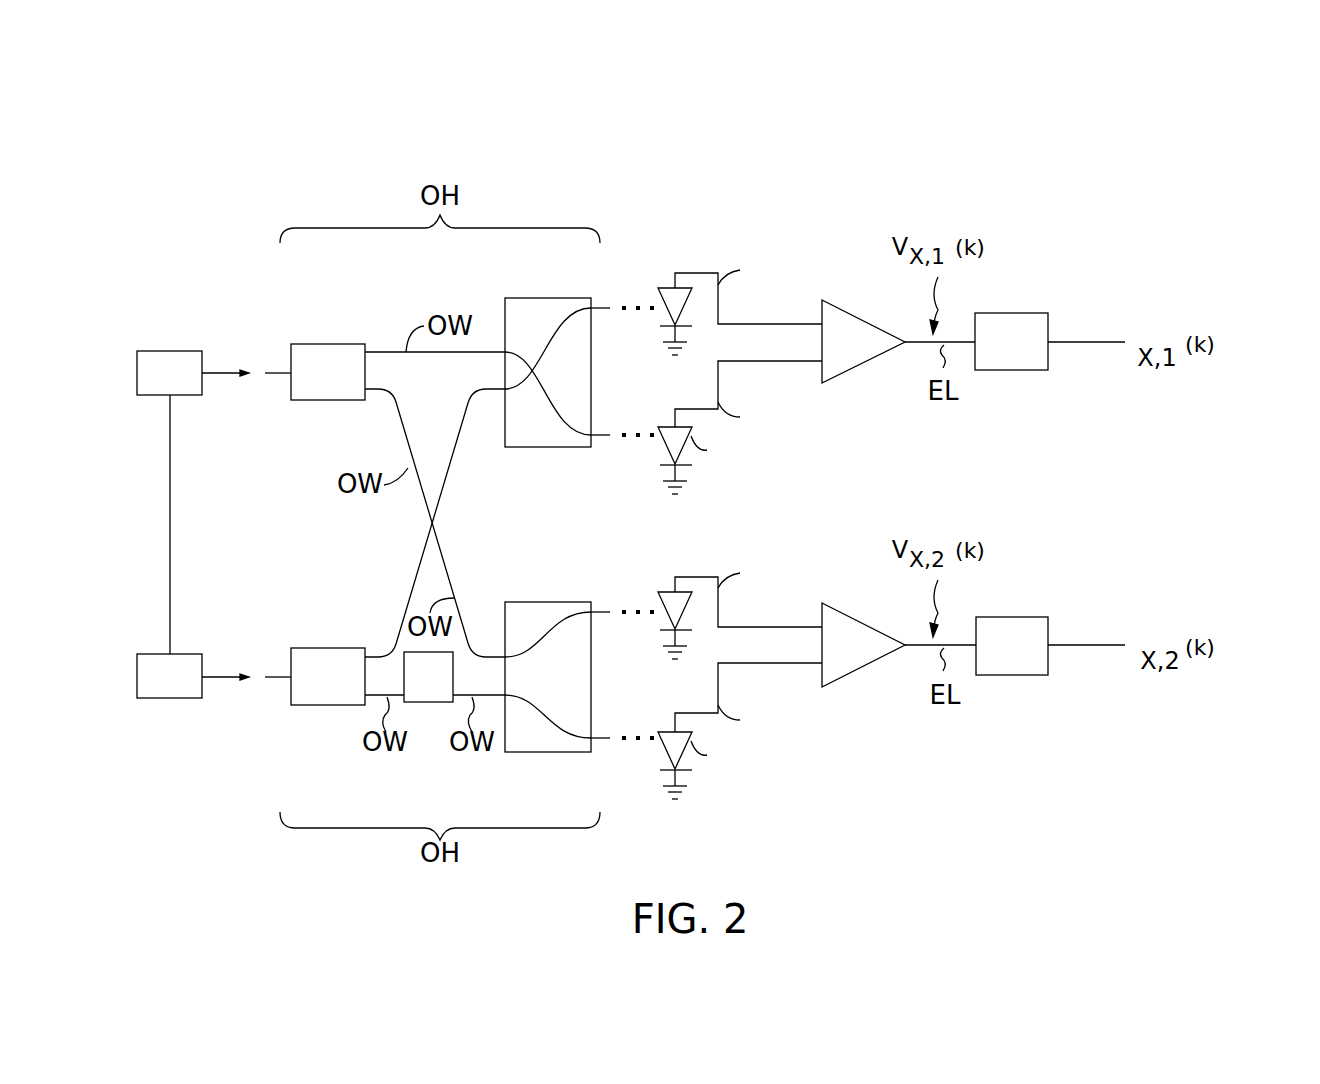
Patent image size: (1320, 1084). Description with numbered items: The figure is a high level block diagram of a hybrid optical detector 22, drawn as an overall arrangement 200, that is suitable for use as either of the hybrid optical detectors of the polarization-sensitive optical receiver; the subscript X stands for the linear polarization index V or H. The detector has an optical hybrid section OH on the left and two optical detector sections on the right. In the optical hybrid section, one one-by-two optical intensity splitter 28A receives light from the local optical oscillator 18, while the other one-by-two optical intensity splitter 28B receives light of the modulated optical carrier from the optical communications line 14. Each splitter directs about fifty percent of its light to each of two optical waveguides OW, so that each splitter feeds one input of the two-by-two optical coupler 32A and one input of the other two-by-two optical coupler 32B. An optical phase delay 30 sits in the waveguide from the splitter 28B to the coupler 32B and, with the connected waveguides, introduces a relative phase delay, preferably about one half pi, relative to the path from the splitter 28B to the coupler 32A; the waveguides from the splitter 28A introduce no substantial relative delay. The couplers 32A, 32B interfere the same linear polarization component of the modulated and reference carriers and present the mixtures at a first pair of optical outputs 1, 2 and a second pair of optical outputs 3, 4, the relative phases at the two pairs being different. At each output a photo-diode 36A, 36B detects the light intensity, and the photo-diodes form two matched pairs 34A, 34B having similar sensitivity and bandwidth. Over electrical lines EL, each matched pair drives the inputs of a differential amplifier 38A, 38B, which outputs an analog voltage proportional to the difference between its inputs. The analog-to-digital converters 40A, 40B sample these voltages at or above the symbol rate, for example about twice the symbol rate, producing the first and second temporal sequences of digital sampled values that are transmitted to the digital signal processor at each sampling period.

The receiver arrangement 200 is at (1133, 162).
The hybrid optical detector 22 is at (895, 139).
The local optical oscillator 18 is at (157, 388).
The optical communications line 14 is at (157, 691).
The 1×2 optical intensity splitter 28A is at (302, 388).
The 1×2 optical intensity splitter 28B is at (302, 691).
The optical phase delay 30 is at (415, 691).
The 2×2 optical coupler 32A is at (533, 448).
The 2×2 optical coupler 32B is at (533, 753).
The matched pair of photo-diodes 34A is at (707, 338).
The matched pair of photo-diodes 34B is at (733, 503).
The photo-diode 36A is at (660, 287).
The photo-diode 36B is at (660, 590).
The differential amplifier 38A is at (826, 357).
The differential amplifier 38B is at (826, 660).
The A/D converter 40A is at (1048, 371).
The A/D converter 40B is at (1050, 675).
The optical output 1 is at (603, 312).
The optical output 2 is at (603, 438).
The optical output 3 is at (607, 620).
The optical output 4 is at (607, 742).